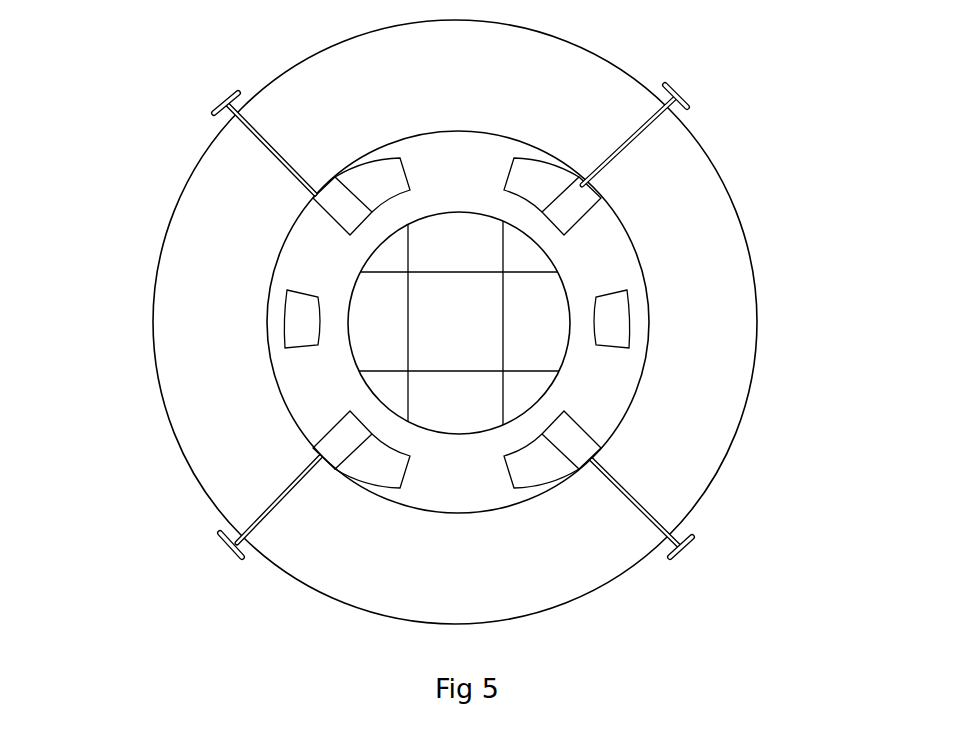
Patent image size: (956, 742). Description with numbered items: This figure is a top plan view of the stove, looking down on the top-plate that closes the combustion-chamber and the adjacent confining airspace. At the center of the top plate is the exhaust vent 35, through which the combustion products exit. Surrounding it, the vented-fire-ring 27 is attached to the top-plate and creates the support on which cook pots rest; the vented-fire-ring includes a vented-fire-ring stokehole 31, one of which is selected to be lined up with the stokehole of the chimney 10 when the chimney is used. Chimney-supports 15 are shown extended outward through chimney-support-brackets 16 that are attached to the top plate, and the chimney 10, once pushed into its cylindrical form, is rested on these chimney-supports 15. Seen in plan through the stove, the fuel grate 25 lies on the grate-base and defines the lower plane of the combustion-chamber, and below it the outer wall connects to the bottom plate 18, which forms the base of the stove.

The chimney 10 is at (167, 418).
The chimney-supports 15 is at (658, 125).
The chimney-support-brackets 16 is at (600, 203).
The bottom plate 18 is at (490, 285).
The fuel grate 25 is at (408, 335).
The vented-fire-ring 27 is at (625, 322).
The vented-fire-ring stokehole 31 is at (432, 488).
The exhaust vent 35 is at (567, 356).